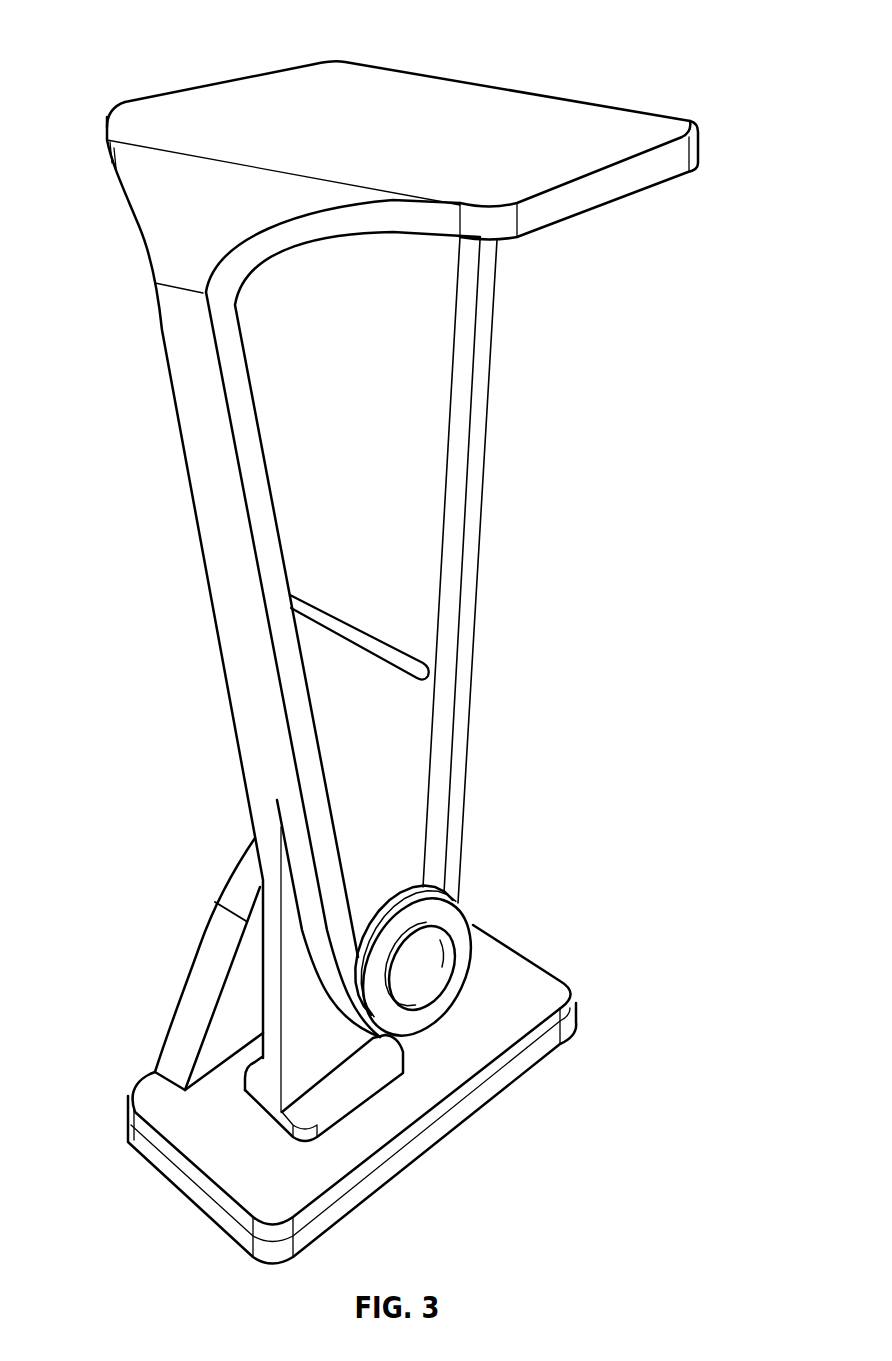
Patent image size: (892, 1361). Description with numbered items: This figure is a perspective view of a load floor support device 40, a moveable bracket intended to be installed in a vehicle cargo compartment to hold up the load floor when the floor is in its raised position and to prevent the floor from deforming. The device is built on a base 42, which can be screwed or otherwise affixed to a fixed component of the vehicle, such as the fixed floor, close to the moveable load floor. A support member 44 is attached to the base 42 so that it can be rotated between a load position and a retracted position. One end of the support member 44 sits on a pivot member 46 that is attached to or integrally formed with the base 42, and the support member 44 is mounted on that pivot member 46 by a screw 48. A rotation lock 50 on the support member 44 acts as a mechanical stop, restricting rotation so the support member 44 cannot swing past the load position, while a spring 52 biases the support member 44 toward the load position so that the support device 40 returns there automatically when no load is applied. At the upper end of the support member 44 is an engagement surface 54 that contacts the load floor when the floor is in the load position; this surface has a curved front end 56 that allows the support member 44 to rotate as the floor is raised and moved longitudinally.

The load floor support device 40 is at (113, 28).
The base 42 is at (207, 1145).
The support member 44 is at (432, 436).
The pivot member 46 is at (185, 961).
The screw 48 is at (445, 945).
The rotation lock 50 is at (330, 1088).
The spring 52 is at (383, 645).
The engagement surface 54 is at (405, 86).
The curved front end 56 is at (150, 202).